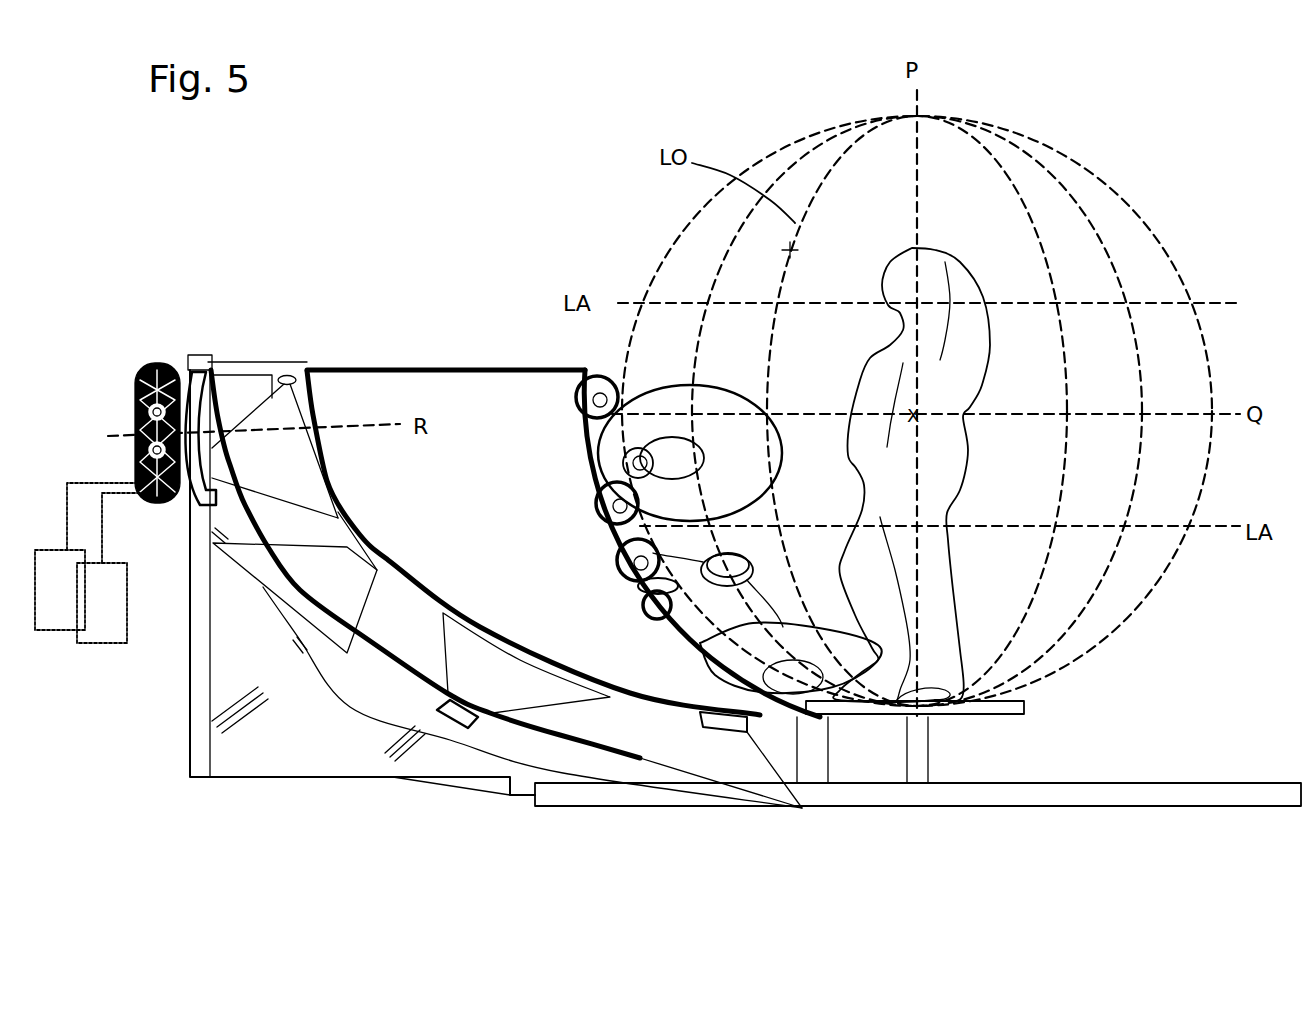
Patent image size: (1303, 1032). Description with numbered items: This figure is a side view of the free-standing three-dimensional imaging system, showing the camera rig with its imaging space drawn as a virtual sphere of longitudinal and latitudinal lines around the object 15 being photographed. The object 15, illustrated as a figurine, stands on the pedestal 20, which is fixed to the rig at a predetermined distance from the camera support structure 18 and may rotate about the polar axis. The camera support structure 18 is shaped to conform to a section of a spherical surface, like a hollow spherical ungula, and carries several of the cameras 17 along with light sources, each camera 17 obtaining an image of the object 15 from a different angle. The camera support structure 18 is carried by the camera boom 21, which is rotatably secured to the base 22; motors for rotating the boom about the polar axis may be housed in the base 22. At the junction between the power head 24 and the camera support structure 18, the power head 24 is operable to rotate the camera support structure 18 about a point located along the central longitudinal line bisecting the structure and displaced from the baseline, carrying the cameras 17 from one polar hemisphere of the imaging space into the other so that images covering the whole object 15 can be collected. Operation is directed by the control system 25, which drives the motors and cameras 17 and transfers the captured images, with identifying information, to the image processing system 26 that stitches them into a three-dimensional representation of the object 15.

The object 15 is at (935, 252).
The cameras 17 is at (592, 376).
The camera support structure 18 is at (405, 368).
The pedestal 20 is at (1025, 720).
The camera boom 21 is at (300, 780).
The base 22 is at (1040, 808).
The power head 24 is at (160, 362).
The control system 25 is at (87, 556).
The image processing system 26 is at (108, 568).